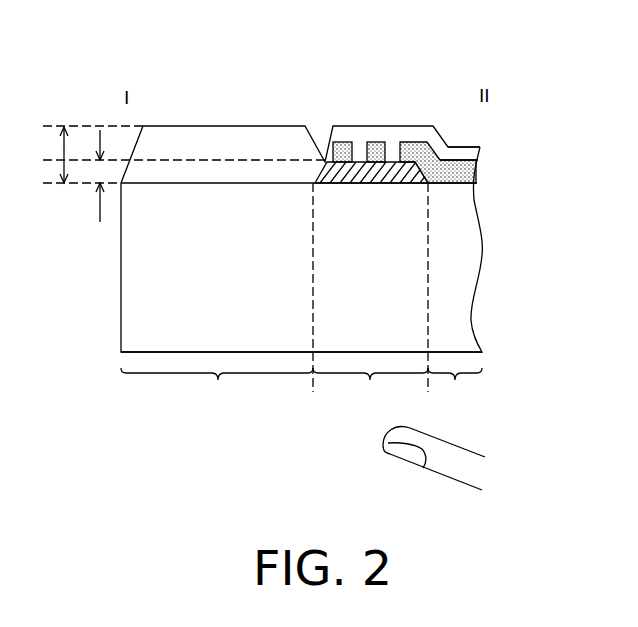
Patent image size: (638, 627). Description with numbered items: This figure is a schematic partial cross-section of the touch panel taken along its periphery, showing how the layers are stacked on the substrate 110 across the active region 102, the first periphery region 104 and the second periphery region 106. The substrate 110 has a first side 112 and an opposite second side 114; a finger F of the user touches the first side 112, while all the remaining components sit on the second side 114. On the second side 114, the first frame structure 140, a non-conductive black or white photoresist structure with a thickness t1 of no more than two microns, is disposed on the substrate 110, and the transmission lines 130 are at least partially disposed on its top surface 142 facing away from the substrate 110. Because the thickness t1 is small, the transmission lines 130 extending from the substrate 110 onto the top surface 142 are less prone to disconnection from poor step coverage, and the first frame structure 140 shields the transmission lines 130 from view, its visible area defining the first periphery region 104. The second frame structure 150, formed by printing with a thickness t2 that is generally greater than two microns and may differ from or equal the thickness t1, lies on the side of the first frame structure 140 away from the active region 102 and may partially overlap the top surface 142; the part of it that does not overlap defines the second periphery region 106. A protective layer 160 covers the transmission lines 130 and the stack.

The substrate 110 is at (450, 283).
The first side 112 is at (146, 353).
The second side 114 is at (196, 182).
The transmission lines 130 is at (457, 185).
The first frame structure 140 is at (372, 172).
The top surface 142 is at (394, 157).
The second frame structure 150 is at (266, 138).
The protective layer 160 is at (479, 153).
The active region 102 is at (455, 394).
The first periphery region 104 is at (370, 394).
The second periphery region 106 is at (217, 394).
The finger F is at (452, 458).
The thickness of the first frame structure t1 is at (87, 176).
The thickness of the second frame structure t2 is at (51, 155).